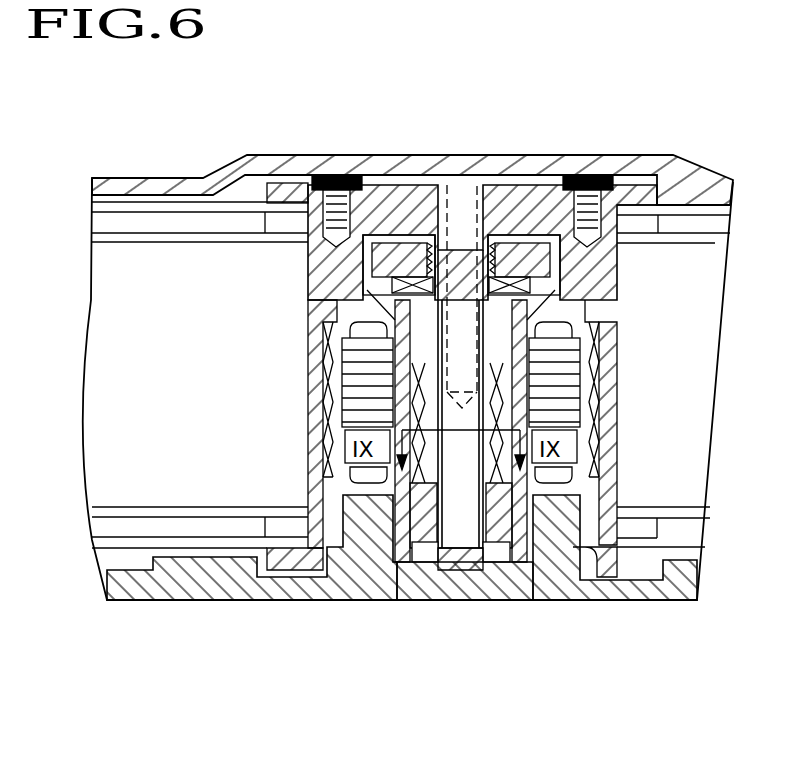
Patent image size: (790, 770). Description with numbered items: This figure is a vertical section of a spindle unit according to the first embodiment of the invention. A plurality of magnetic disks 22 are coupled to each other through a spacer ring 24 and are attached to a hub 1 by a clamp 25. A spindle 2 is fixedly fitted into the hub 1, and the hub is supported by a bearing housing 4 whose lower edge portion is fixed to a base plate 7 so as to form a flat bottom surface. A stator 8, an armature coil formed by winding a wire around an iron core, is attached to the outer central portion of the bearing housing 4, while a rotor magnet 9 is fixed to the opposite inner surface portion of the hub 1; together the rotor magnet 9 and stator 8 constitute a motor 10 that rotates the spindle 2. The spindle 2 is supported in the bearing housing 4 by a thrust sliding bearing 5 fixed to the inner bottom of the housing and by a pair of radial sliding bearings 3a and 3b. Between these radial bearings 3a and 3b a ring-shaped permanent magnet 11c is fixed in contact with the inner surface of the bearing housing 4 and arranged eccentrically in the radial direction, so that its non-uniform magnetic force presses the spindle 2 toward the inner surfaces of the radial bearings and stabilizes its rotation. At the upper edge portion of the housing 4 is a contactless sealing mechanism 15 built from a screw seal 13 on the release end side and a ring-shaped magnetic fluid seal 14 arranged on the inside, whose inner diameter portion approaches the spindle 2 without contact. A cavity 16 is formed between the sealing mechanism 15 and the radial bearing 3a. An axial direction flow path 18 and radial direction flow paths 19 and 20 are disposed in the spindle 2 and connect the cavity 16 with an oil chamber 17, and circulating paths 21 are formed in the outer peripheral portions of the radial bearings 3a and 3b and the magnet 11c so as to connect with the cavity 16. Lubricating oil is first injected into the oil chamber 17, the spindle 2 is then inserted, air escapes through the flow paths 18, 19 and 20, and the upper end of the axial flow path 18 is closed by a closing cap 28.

The hub 1 is at (396, 188).
The spindle 2 is at (465, 540).
The radial sliding bearing 3a is at (603, 333).
The radial sliding bearing 3b is at (530, 513).
The bearing housing 4 is at (520, 372).
The thrust sliding bearing 5 is at (457, 572).
The base plate 7 is at (362, 578).
The stator 8 is at (347, 352).
The rotor magnet 9 is at (345, 381).
The motor 10 is at (404, 402).
The permanent magnet 11c is at (575, 401).
The screw seal 13 is at (375, 248).
The magnetic fluid seal 14 is at (395, 284).
The contactless sealing mechanism 15 is at (264, 300).
The cavity 16 is at (575, 309).
The oil chamber 17 is at (418, 542).
The axial direction flow path 18 is at (526, 185).
The radial direction flow path 19 is at (400, 305).
The radial direction flow path 20 is at (415, 412).
The circulating path 21 is at (528, 545).
The magnetic disk 22 is at (165, 193).
The spacer ring 24 is at (262, 224).
The clamp 25 is at (289, 196).
The closing cap 28 is at (460, 200).